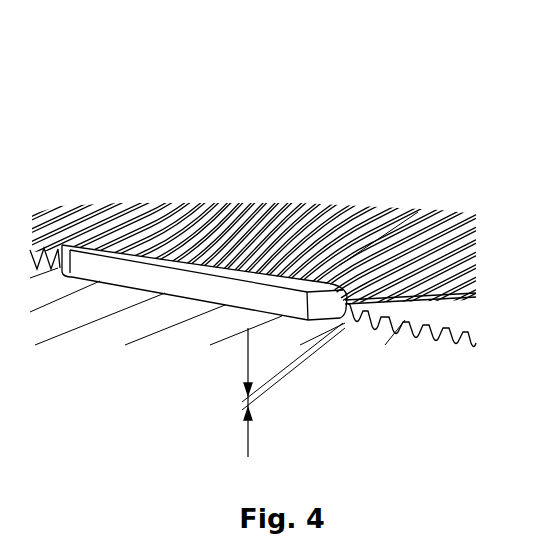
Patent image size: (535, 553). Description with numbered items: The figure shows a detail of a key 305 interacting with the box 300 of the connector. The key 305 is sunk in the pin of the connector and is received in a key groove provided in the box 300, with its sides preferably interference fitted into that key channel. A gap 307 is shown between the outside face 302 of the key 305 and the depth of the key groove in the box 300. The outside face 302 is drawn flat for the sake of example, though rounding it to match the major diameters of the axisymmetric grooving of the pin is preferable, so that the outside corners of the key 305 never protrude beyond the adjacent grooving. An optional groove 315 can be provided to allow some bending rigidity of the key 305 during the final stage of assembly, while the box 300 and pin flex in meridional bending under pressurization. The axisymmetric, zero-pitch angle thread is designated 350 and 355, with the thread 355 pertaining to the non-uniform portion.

The box 300 is at (188, 232).
The outside face 302 is at (187, 359).
The key 305 is at (185, 350).
The gap 307 is at (293, 390).
The groove 315 is at (411, 377).
The axisymmetric zero-pitch angle thread 350 is at (255, 276).
The non-uniform axisymmetric zero-pitch angle thread 355 is at (323, 158).